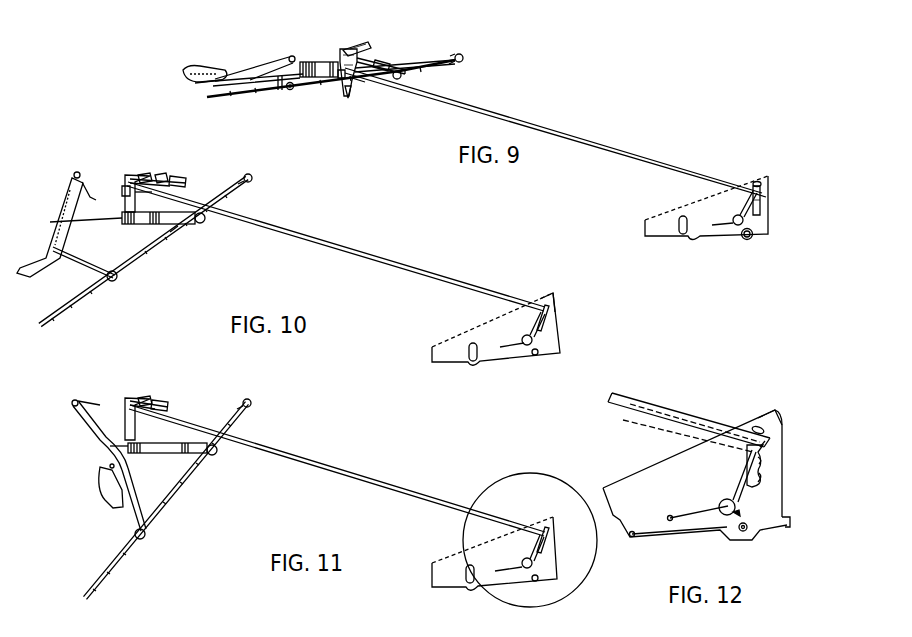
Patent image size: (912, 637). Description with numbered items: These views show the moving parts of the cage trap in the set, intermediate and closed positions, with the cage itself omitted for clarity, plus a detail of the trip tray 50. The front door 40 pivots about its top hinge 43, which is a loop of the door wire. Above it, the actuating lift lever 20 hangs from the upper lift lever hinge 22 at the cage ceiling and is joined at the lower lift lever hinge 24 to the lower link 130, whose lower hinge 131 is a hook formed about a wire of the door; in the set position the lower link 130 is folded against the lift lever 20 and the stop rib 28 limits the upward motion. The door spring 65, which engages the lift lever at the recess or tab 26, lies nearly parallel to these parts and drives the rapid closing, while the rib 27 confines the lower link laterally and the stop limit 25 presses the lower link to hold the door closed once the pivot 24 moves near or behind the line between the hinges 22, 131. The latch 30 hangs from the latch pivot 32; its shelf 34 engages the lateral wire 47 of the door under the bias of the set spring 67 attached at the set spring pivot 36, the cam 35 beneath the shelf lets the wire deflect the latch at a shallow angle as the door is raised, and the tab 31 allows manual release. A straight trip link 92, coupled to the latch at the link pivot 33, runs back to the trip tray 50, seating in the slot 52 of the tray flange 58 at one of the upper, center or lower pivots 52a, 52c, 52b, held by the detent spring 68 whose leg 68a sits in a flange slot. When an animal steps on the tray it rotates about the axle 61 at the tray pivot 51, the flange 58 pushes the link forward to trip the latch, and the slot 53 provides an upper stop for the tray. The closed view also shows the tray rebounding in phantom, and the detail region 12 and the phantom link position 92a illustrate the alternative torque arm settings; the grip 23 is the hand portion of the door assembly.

In FIG. 11, the detail region of FIG. 12 is at (530, 526).
In FIG. 9, the actuating lift lever 20 is at (278, 57).
In FIG. 9, the upper lift lever hinge 22 is at (296, 57).
In FIG. 10, the upper lift lever hinge 22 is at (72, 176).
In FIG. 11, the upper lift lever hinge 22 is at (78, 400).
In FIG. 9, the hand grip 23 is at (186, 72).
In FIG. 9, the lower lift lever hinge 24 is at (222, 80).
In FIG. 10, the lower lift lever hinge 24 is at (45, 248).
In FIG. 11, the lower lift lever hinge 24 is at (110, 470).
In FIG. 11, the stop limit 25 is at (108, 500).
In FIG. 10, the recess or tab 26 is at (86, 186).
In FIG. 11, the rib 27 is at (110, 465).
In FIG. 9, the stop rib 28 is at (280, 84).
In FIG. 9, the latch 30 is at (346, 92).
In FIG. 10, the latch 30 is at (128, 173).
In FIG. 10, the tab 31 is at (158, 175).
In FIG. 9, the latch pivot 32 is at (349, 50).
In FIG. 9, the link pivot 33 is at (344, 73).
In FIG. 10, the link pivot 33 is at (125, 188).
In FIG. 9, the shelf 34 is at (353, 80).
In FIG. 10, the shelf 34 is at (142, 192).
In FIG. 9, the cam 35 is at (351, 86).
In FIG. 10, the set spring pivot 36 is at (143, 176).
In FIG. 9, the front door 40 is at (222, 96).
In FIG. 10, the front door 40 is at (150, 252).
In FIG. 11, the front door 40 is at (172, 498).
In FIG. 9, the top hinge 43 is at (466, 58).
In FIG. 10, the top hinge 43 is at (256, 180).
In FIG. 11, the top hinge 43 is at (257, 404).
In FIG. 9, the lateral wire 47 is at (353, 80).
In FIG. 10, the lateral wire 47 is at (160, 243).
In FIG. 9, the trip tray 50 is at (700, 225).
In FIG. 10, the trip tray 50 is at (455, 345).
In FIG. 12, the trip tray 50 is at (665, 540).
In FIG. 9, the tray pivot 51 is at (750, 237).
In FIG. 12, the tray pivot 51 is at (752, 532).
In FIG. 9, the slot 52 is at (770, 190).
In FIG. 12, the slot 52 is at (745, 465).
In FIG. 12, the upper pivot 52a is at (765, 440).
In FIG. 12, the lower pivot 52b is at (762, 477).
In FIG. 12, the center pivot 52c is at (762, 459).
In FIG. 10, the slot 53 is at (470, 358).
In FIG. 10, the tray flange 58 is at (550, 293).
In FIG. 12, the tray flange 58 is at (775, 412).
In FIG. 9, the axle 61 is at (750, 237).
In FIG. 9, the door spring 65 is at (322, 61).
In FIG. 10, the door spring 65 is at (145, 220).
In FIG. 11, the door spring 65 is at (145, 453).
In FIG. 9, the set spring 67 is at (368, 58).
In FIG. 10, the set spring 67 is at (172, 180).
In FIG. 9, the detent spring 68 is at (762, 212).
In FIG. 10, the detent spring 68 is at (533, 328).
In FIG. 12, the detent spring 68 is at (745, 485).
In FIG. 9, the leg 68a is at (756, 182).
In FIG. 12, the leg 68a is at (760, 427).
In FIG. 9, the trip link 92 is at (557, 131).
In FIG. 10, the trip link 92 is at (365, 254).
In FIG. 11, the trip link 92 is at (337, 470).
In FIG. 12, the trip link 92 is at (686, 413).
In FIG. 12, the lift bar centerline 92a is at (668, 432).
In FIG. 9, the lower link 130 is at (256, 82).
In FIG. 10, the lower link 130 is at (78, 262).
In FIG. 9, the lower hinge 131 is at (291, 90).
In FIG. 10, the lower hinge 131 is at (118, 278).
In FIG. 11, the lower hinge 131 is at (146, 536).